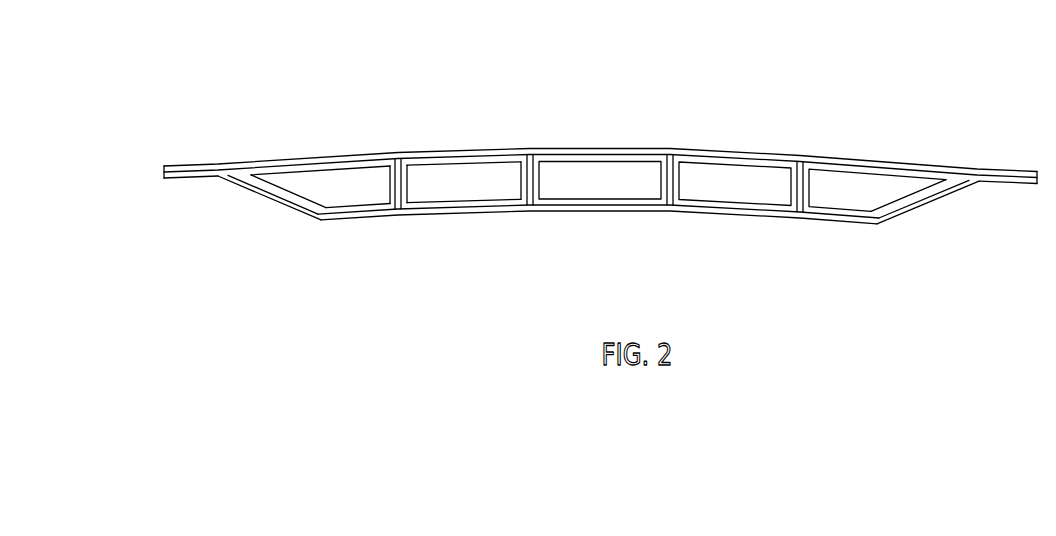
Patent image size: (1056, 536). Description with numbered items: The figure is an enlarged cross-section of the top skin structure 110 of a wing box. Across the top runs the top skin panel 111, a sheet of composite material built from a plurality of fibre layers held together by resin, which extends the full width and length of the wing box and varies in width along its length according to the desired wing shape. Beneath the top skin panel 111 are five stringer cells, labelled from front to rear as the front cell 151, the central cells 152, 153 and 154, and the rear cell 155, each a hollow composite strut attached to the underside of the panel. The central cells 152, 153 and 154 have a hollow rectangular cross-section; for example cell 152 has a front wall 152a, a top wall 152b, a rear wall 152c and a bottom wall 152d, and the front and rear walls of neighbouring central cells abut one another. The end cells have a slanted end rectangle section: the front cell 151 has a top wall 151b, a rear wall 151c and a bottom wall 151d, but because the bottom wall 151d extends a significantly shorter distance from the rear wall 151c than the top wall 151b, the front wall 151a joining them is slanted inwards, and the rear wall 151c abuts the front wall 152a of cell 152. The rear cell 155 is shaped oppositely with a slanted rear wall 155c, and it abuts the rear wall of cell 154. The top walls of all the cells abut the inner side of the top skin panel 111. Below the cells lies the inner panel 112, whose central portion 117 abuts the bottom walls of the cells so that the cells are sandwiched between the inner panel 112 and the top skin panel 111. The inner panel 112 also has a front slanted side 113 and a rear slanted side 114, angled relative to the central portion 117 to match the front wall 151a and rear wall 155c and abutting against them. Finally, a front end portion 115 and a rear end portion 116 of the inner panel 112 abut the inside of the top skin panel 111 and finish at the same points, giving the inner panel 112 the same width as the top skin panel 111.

The top skin structure 110 is at (600, 171).
The top skin panel 111 is at (556, 152).
The inner panel 112 is at (745, 248).
The front slanted side 113 is at (262, 193).
The rear slanted side 114 is at (943, 194).
The front end portion 115 is at (189, 180).
The rear end portion 116 is at (1007, 184).
The central portion 117 is at (581, 212).
The front stringer cell 151 is at (329, 182).
The front wall 151a is at (305, 209).
The top wall 151b is at (290, 161).
The rear wall 151c is at (398, 213).
The bottom wall 151d is at (356, 213).
The stringer cell 152 is at (449, 182).
The front wall 152a is at (394, 163).
The top wall 152b is at (440, 157).
The rear wall 152c is at (529, 210).
The bottom wall 152d is at (458, 210).
The stringer cell 153 is at (613, 177).
The stringer cell 154 is at (737, 178).
The rear stringer cell 155 is at (877, 177).
The rear wall 155c is at (897, 203).